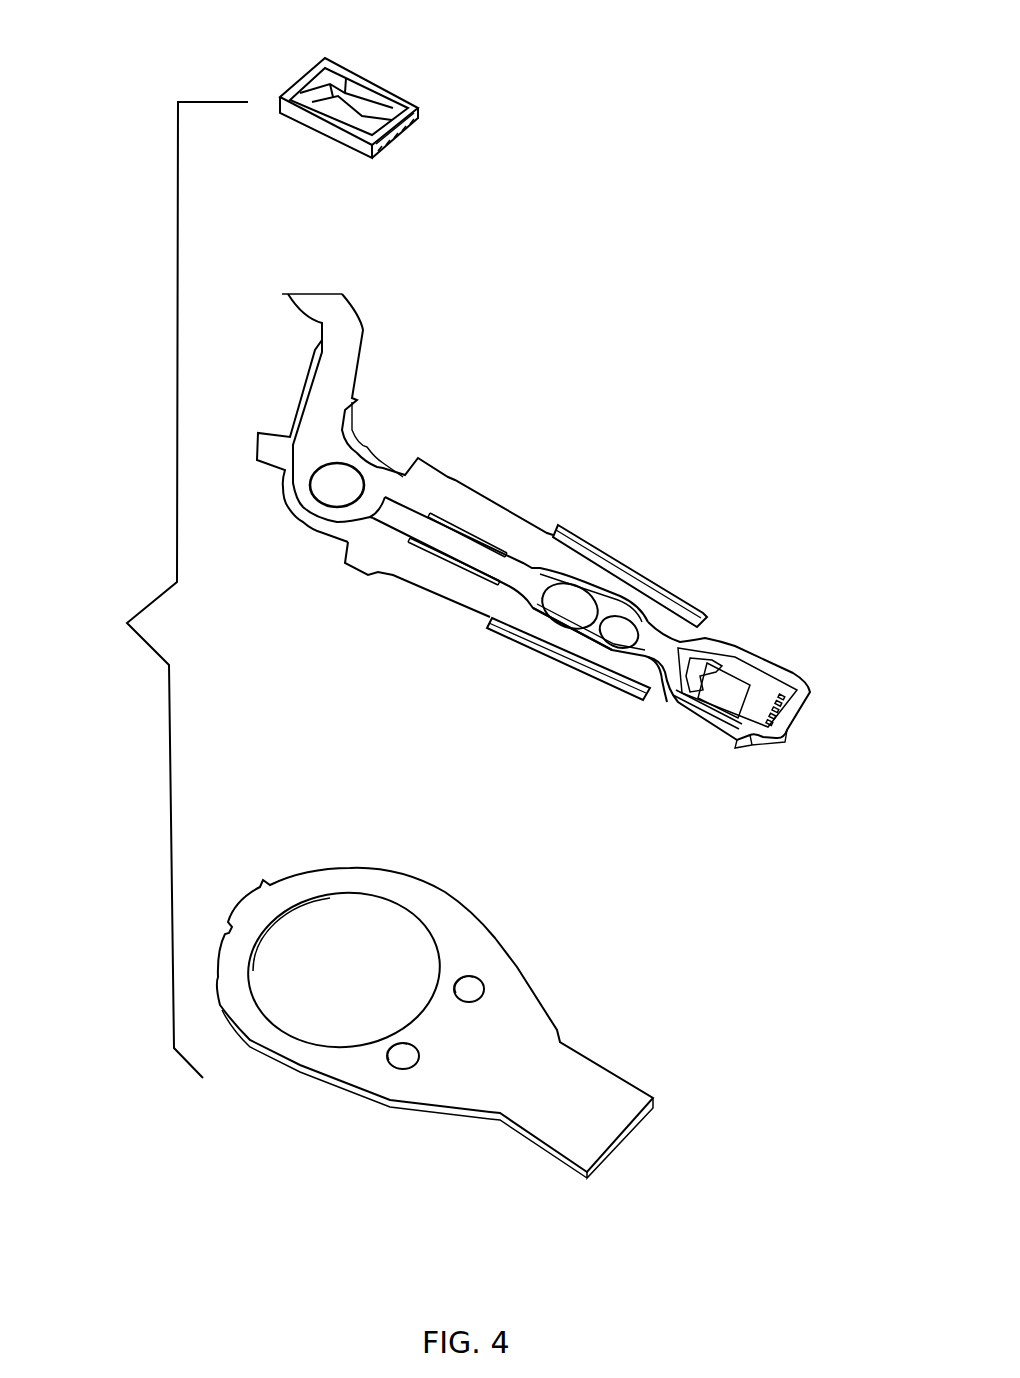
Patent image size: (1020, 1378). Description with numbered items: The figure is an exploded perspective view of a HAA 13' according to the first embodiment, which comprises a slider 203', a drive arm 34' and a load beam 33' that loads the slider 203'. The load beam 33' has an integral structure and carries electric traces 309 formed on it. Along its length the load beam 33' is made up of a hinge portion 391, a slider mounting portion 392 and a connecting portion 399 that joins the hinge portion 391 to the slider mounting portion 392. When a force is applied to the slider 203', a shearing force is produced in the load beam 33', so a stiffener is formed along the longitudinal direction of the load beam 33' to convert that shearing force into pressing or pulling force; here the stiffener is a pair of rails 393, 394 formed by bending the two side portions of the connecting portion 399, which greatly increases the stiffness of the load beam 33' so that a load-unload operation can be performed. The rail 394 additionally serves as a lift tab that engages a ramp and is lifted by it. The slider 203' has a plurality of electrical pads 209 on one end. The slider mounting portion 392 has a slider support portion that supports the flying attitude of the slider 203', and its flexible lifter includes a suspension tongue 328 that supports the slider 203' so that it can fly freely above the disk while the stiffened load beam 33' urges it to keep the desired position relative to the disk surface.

The HAA 13' is at (144, 590).
The slider 203' is at (441, 91).
The electrical pads 209 is at (410, 128).
The load beam 33' is at (466, 474).
The electric traces 309 is at (473, 553).
The suspension tongue 328 is at (755, 697).
The hinge portion 391 is at (393, 603).
The slider mounting portion 392 is at (703, 737).
The rail 393 is at (552, 653).
The rail 394 is at (630, 565).
The connecting portion 399 is at (590, 690).
The drive arm 34' is at (458, 1023).